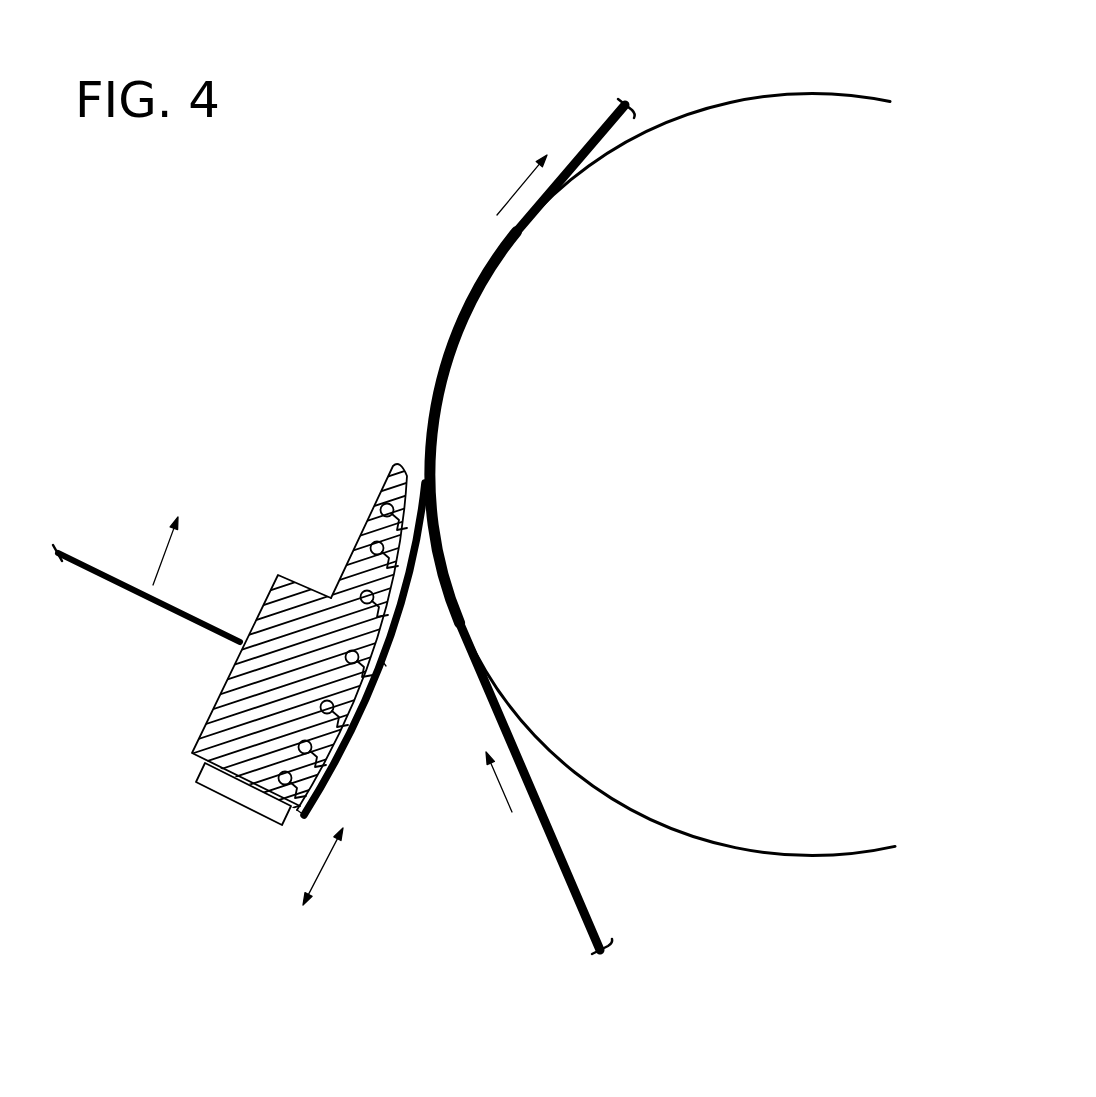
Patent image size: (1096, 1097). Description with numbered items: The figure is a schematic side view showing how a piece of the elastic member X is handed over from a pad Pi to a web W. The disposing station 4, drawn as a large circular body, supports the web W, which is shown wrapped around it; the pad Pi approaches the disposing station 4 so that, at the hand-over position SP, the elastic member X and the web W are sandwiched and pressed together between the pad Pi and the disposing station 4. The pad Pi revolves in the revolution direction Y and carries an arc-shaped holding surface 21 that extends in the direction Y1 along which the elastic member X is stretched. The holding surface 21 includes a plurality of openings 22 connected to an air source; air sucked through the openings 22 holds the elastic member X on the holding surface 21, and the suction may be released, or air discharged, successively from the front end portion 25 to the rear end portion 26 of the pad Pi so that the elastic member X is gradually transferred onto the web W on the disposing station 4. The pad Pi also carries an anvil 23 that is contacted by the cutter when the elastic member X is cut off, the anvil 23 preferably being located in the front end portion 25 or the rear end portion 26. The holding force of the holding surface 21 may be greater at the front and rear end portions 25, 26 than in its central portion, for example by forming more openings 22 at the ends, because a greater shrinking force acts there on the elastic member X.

The disposing station 4 is at (733, 100).
The holding surface 21 is at (375, 702).
The openings 22 is at (346, 654).
The anvil 23 is at (285, 830).
The front end portion 25 is at (393, 465).
The rear end portion 26 is at (243, 810).
The pad Pi is at (213, 694).
The elastic member X is at (383, 662).
The revolution direction Y is at (162, 552).
The direction along which the elastic member is stretched Y1 is at (328, 877).
The web W is at (545, 842).
The hand-over position SP is at (453, 477).